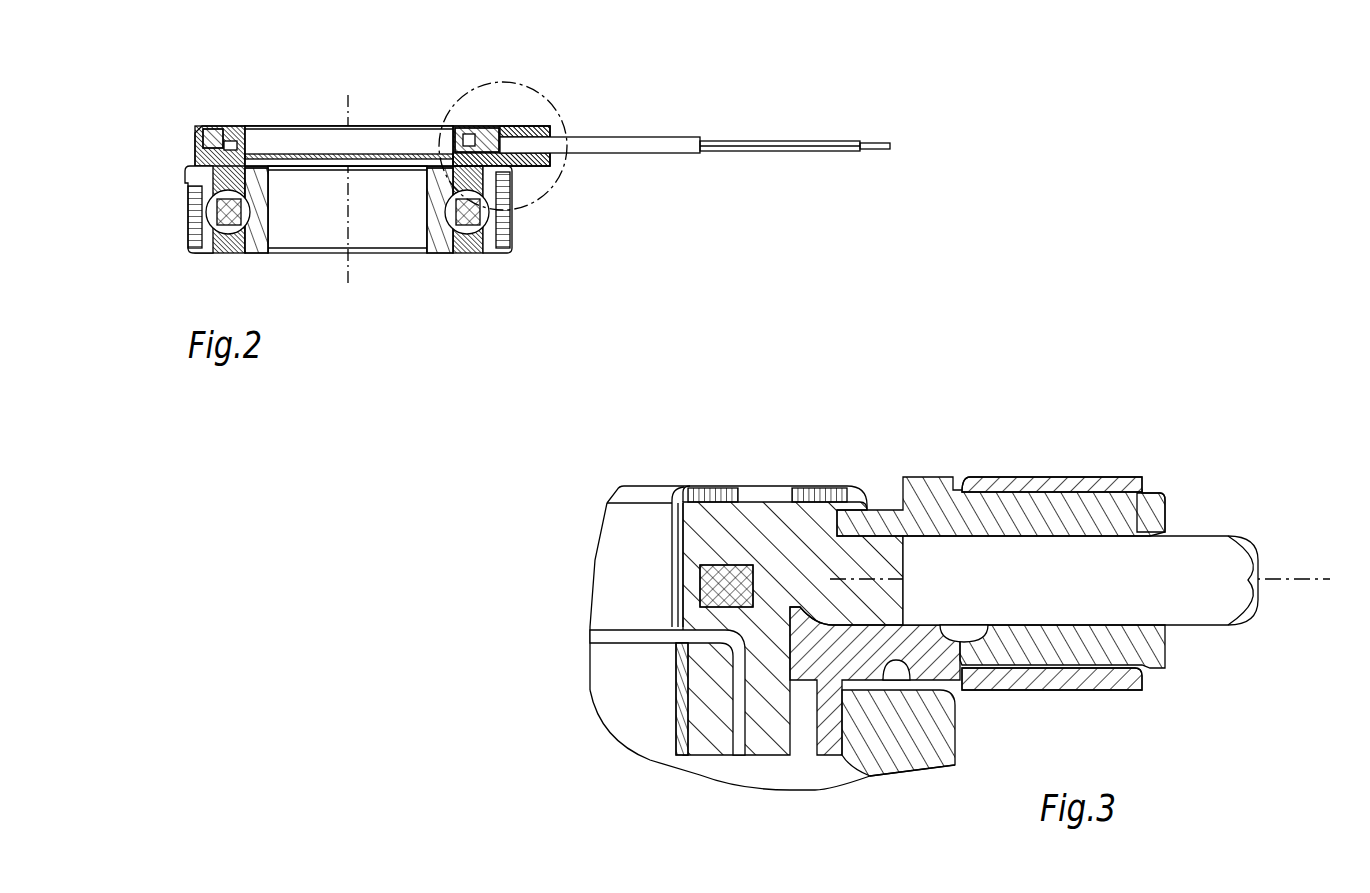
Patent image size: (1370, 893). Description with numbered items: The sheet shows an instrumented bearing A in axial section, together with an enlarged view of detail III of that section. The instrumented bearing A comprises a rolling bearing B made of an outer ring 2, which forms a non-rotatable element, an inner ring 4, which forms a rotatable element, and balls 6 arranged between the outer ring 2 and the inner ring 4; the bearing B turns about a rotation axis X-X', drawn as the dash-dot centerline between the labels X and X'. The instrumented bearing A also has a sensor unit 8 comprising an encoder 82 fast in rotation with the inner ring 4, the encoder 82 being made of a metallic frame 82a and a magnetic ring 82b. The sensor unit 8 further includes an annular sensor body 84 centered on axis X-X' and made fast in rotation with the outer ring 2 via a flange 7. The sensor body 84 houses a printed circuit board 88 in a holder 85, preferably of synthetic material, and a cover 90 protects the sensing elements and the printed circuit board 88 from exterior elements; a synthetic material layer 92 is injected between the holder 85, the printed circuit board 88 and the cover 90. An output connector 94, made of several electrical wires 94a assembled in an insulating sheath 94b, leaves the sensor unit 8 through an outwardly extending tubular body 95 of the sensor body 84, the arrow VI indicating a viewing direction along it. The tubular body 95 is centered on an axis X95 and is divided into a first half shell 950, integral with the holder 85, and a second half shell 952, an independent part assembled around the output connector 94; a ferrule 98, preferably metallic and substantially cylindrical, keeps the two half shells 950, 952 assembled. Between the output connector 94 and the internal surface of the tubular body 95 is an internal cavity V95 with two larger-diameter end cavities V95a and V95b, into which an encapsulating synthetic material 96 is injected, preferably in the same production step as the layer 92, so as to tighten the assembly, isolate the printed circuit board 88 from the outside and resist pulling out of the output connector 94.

In FIG. 2, the outer ring 2 is at (195, 176).
In FIG. 3, the outer ring 2 is at (906, 752).
In FIG. 2, the inner ring 4 is at (262, 238).
In FIG. 3, the inner ring 4 is at (632, 718).
In FIG. 2, the balls 6 is at (213, 216).
In FIG. 3, the flange 7 is at (836, 722).
In FIG. 2, the sensor unit 8 is at (462, 289).
In FIG. 3, the sensor unit 8 is at (537, 493).
In FIG. 2, the encoder 82 is at (450, 172).
In FIG. 3, the encoder 82 is at (542, 585).
In FIG. 3, the metallic frame 82a is at (680, 665).
In FIG. 3, the magnetic ring 82b is at (690, 640).
In FIG. 2, the sensor body 84 is at (407, 147).
In FIG. 3, the sensor body 84 is at (603, 490).
In FIG. 3, the holder 85 is at (765, 740).
In FIG. 3, the printed circuit board 88 is at (671, 512).
In FIG. 3, the cover 90 is at (855, 507).
In FIG. 3, the synthetic material layer 92 is at (760, 508).
In FIG. 2, the output connector 94 is at (675, 158).
In FIG. 3, the output connector 94 is at (1196, 552).
In FIG. 2, the electrical wires 94a is at (773, 142).
In FIG. 2, the insulating sheath 94b is at (590, 146).
In FIG. 3, the tubular body 95 is at (1125, 702).
In FIG. 3, the encapsulating synthetic material 96 is at (1168, 632).
In FIG. 3, the ferrule 98 is at (1047, 487).
In FIG. 3, the first half shell 950 is at (1160, 670).
In FIG. 3, the second half shell 952 is at (1153, 507).
In FIG. 2, the instrumented bearing A is at (380, 117).
In FIG. 3, the instrumented bearing A is at (815, 405).
In FIG. 2, the bearing B is at (537, 173).
In FIG. 2, the detail III is at (552, 100).
In FIG. 2, the view VI is at (590, 223).
In FIG. 2, the rotation axis X-X' X is at (349, 202).
In FIG. 2, the rotation axis X- X' is at (349, 85).
In FIG. 3, the axis X95 is at (1099, 581).
In FIG. 3, the internal cavity V95 is at (1010, 522).
In FIG. 3, the smaller cavity V95a is at (934, 522).
In FIG. 3, the smaller cavity V95b is at (1125, 522).